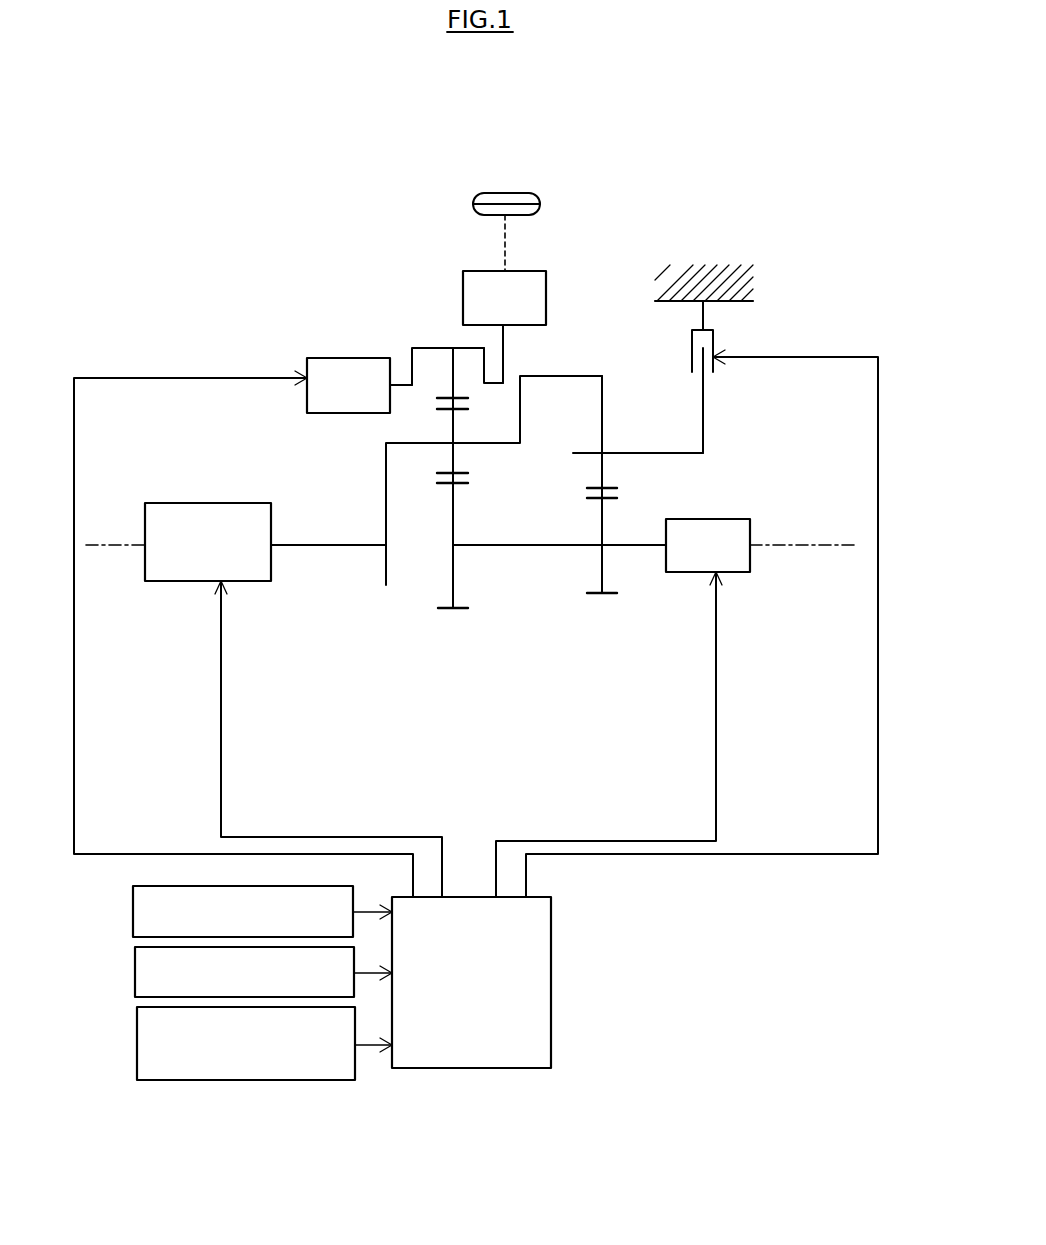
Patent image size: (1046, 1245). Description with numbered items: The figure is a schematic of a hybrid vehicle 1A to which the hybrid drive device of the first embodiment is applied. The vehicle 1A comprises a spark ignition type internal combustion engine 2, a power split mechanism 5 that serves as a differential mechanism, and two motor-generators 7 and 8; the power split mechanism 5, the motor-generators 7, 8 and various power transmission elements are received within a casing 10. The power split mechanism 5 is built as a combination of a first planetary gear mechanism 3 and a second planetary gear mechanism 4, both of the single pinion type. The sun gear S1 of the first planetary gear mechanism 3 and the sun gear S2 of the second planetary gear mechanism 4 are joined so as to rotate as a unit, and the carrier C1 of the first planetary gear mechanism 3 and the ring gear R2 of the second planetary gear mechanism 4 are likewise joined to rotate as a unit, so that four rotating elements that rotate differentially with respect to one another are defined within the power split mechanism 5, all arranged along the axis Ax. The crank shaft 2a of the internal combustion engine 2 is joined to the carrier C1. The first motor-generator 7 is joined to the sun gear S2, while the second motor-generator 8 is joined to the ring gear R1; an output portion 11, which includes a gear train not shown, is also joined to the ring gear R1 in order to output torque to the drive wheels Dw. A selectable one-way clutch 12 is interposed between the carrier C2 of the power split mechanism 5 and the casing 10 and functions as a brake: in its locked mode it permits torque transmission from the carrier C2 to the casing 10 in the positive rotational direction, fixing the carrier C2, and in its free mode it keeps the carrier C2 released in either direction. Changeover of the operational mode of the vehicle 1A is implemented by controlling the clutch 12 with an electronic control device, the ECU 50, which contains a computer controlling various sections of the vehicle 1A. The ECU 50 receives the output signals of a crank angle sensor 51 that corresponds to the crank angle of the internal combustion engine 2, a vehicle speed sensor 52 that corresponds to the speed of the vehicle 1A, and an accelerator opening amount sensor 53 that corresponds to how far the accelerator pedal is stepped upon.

The vehicle 1A is at (393, 139).
The internal combustion engine 2 is at (187, 503).
The crank shaft 2a is at (350, 547).
The first planetary gear mechanism 3 is at (427, 601).
The second planetary gear mechanism 4 is at (565, 612).
The power split mechanism 5 is at (502, 717).
The first motor-generator 7 is at (703, 519).
The second motor-generator 8 is at (345, 358).
The casing 10 is at (680, 301).
The output portion 11 is at (463, 294).
The selectable one-way clutch 12 is at (723, 340).
The electronic control device (ECU) 50 is at (551, 950).
The crank angle sensor 51 is at (133, 912).
The vehicle speed sensor 52 is at (135, 974).
The accelerator opening amount sensor 53 is at (137, 1042).
The drive wheels Dw is at (505, 193).
The ring gear R1 is at (453, 377).
The sun gear S1 is at (453, 515).
The carrier C1 is at (386, 478).
The ring gear R2 is at (602, 387).
The sun gear S2 is at (602, 529).
The carrier C2 is at (703, 398).
The axis Ax is at (133, 548).